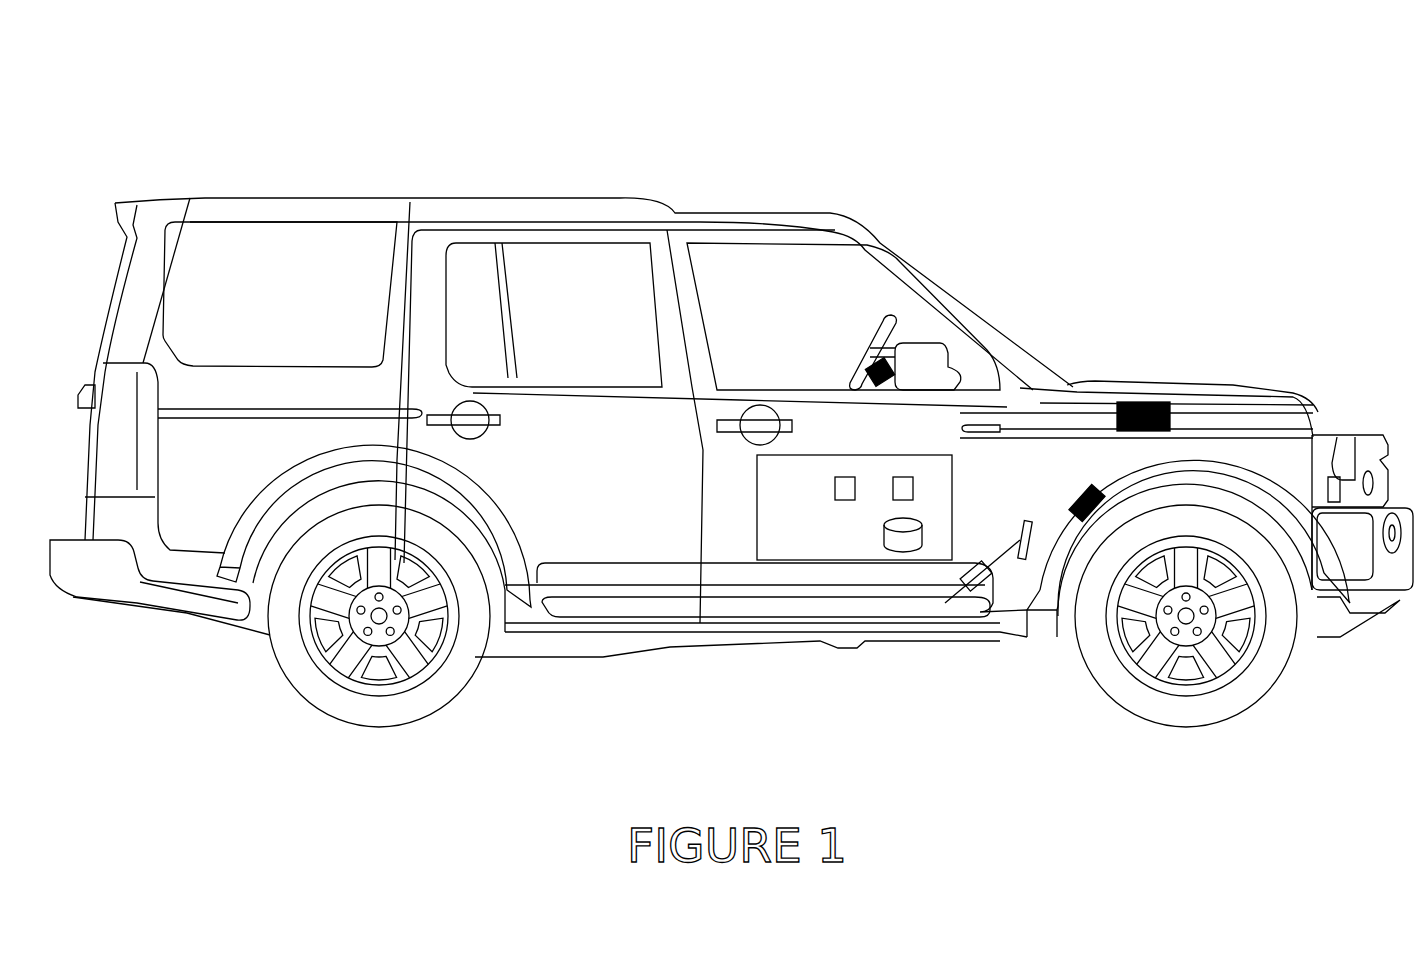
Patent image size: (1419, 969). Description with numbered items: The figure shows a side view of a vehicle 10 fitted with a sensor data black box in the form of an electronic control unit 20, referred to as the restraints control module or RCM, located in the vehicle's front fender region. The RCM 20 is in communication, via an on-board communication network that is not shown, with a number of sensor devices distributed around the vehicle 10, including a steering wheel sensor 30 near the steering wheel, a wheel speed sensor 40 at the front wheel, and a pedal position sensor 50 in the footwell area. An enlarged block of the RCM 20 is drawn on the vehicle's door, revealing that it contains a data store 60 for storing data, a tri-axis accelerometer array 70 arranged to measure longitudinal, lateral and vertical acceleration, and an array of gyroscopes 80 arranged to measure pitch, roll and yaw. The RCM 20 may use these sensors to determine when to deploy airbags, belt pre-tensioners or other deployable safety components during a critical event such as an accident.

The vehicle 10 is at (405, 160).
The electronic control unit (restraints control module) 20 is at (940, 456).
The steering wheel sensor 30 is at (870, 370).
The wheel speed sensor 40 is at (1095, 510).
The pedal position sensor 50 is at (1018, 577).
The data store 60 is at (884, 536).
The tri-axis accelerometer array 70 is at (841, 477).
The array of gyroscopes 80 is at (901, 477).